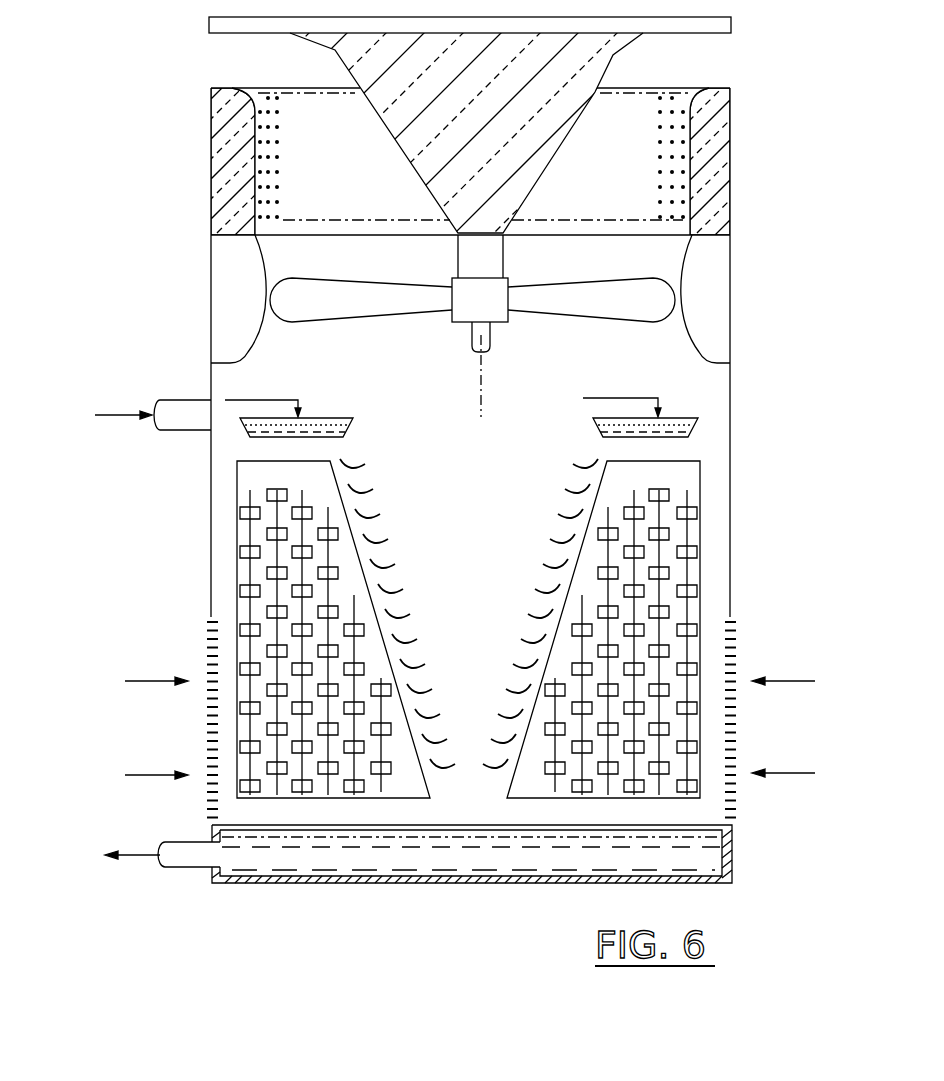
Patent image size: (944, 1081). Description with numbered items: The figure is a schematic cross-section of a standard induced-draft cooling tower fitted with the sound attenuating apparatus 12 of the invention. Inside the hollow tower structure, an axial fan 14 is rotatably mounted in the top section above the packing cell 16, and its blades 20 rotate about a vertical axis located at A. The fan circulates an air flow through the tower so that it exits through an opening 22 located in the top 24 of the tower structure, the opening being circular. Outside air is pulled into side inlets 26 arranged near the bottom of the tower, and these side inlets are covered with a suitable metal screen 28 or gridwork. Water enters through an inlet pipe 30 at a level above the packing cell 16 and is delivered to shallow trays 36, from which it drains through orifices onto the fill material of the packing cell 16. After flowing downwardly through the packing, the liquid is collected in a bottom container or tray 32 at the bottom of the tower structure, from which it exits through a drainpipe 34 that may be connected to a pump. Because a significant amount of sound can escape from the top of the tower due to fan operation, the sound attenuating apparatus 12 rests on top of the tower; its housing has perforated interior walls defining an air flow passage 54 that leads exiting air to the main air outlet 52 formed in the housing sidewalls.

The sound attenuating apparatus 12 is at (730, 137).
The axial fan 14 is at (361, 306).
The packing cell 16 is at (255, 536).
The blades 20 is at (614, 306).
The opening 22 is at (343, 247).
The top 24 is at (727, 217).
The side inlets 26 is at (212, 632).
The metal screen 28 is at (738, 752).
The inlet pipe 30 is at (184, 400).
The bottom container or tray 32 is at (733, 852).
The drainpipe 34 is at (182, 842).
The shallow trays 36 is at (700, 427).
The air outlet 52 is at (708, 57).
The air flow passage 54 is at (635, 204).
The vertical axis A is at (481, 390).